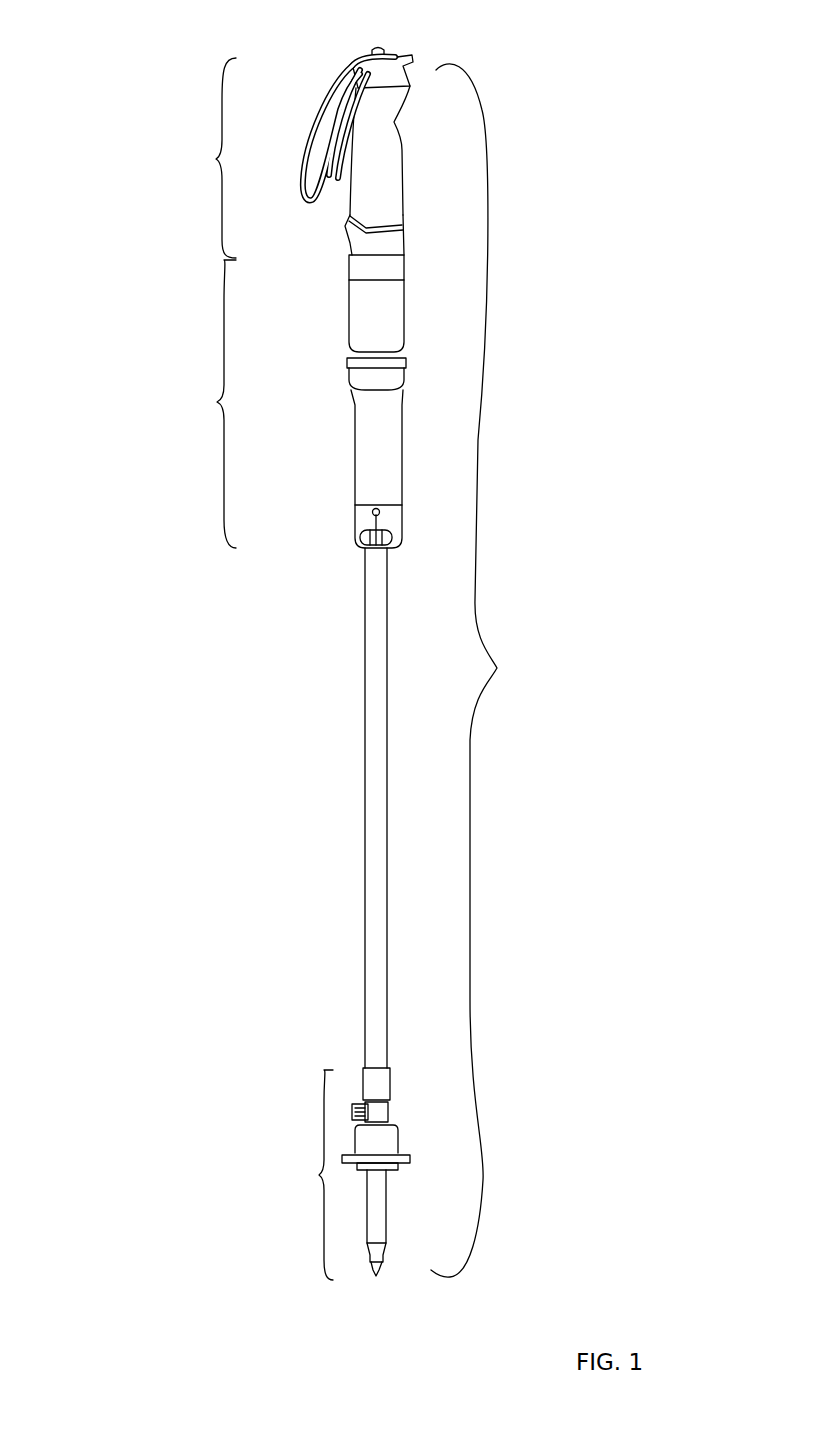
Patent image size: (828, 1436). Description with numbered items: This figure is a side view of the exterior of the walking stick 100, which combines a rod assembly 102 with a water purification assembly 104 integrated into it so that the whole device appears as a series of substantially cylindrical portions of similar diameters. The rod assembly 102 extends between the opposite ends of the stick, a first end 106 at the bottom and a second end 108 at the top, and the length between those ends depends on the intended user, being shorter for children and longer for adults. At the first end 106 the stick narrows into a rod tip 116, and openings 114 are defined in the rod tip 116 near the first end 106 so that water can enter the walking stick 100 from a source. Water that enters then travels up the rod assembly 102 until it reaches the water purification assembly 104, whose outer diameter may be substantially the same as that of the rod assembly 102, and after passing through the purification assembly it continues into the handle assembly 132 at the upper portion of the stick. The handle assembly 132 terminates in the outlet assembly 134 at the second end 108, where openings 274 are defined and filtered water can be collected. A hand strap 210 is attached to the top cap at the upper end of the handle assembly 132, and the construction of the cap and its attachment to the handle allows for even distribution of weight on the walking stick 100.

The walking stick 100 is at (121, 59).
The rod assembly 102 is at (491, 670).
The water purification assembly 104 is at (288, 401).
The first end 106 is at (407, 1302).
The second end 108 is at (405, 68).
The openings 114 is at (377, 1276).
The rod tip 116 is at (344, 1174).
The handle assembly 132 is at (202, 158).
The outlet assembly 134 is at (413, 44).
The hand strap 210 is at (309, 150).
The openings 274 is at (372, 53).